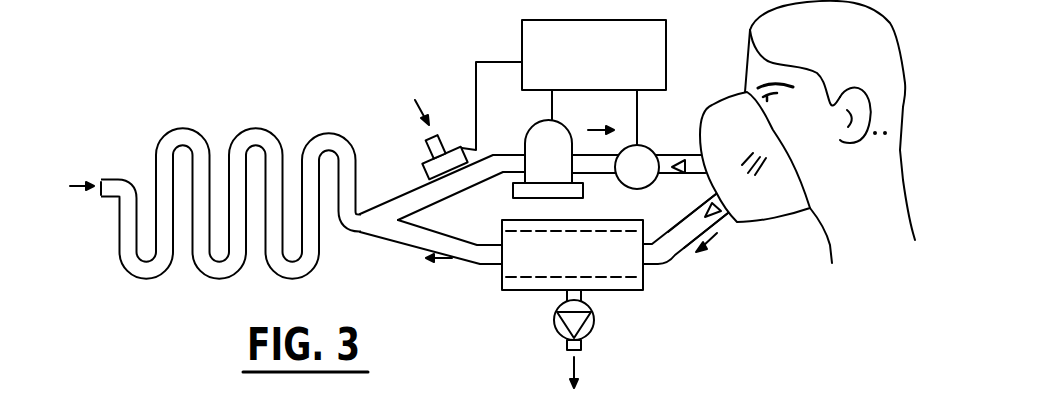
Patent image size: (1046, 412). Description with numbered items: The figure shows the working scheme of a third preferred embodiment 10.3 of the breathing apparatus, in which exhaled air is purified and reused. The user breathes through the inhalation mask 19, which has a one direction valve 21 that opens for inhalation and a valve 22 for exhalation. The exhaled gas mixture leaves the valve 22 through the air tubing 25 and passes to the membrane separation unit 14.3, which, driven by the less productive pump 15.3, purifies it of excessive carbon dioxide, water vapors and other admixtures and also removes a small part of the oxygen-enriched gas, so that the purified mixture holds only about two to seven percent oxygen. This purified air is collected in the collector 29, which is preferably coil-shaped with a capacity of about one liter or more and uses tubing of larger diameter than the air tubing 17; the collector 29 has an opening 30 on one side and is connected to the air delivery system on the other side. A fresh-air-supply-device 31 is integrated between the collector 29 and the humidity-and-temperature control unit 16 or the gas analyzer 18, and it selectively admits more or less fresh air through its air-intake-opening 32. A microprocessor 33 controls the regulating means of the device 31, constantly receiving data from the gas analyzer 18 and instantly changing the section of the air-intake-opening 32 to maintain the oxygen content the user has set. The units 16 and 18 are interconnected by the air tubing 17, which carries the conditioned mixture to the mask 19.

The third preferred embodiment 10.3 is at (338, 41).
The membrane separation unit 14.3 is at (518, 284).
The pump 15.3 is at (579, 320).
The humidity and temperature control unit 16 is at (546, 143).
The air tubing 17 is at (667, 160).
The gas analyzer 18 is at (642, 177).
The inhalation mask 19 is at (731, 116).
The one direction valve 21 is at (680, 158).
The valve 22 is at (727, 215).
The air tubing 25 is at (673, 253).
The collector 29 is at (257, 138).
The opening 30 is at (103, 183).
The fresh-air-supply-device 31 is at (440, 168).
The air-intake-opening 32 is at (451, 123).
The microprocessor 33 is at (600, 69).